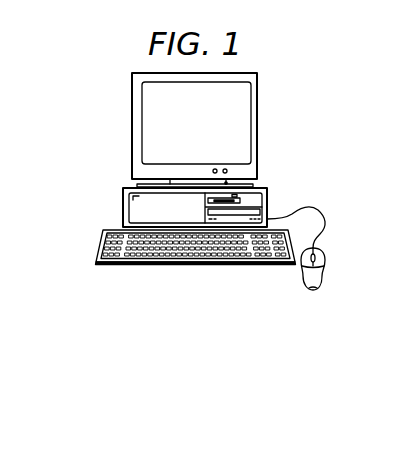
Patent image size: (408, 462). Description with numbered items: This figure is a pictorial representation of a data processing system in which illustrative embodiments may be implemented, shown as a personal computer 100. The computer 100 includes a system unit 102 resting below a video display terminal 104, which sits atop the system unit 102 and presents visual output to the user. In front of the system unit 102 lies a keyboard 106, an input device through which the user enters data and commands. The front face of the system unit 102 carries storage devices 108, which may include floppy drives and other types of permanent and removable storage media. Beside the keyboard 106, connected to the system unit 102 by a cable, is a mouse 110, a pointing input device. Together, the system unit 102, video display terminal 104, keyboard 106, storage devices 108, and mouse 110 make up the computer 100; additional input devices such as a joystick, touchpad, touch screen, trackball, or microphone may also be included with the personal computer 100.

The computer 100 is at (74, 115).
The system unit 102 is at (123, 205).
The video display terminal 104 is at (257, 127).
The keyboard 106 is at (118, 265).
The storage devices 108 is at (238, 201).
The mouse 110 is at (313, 290).